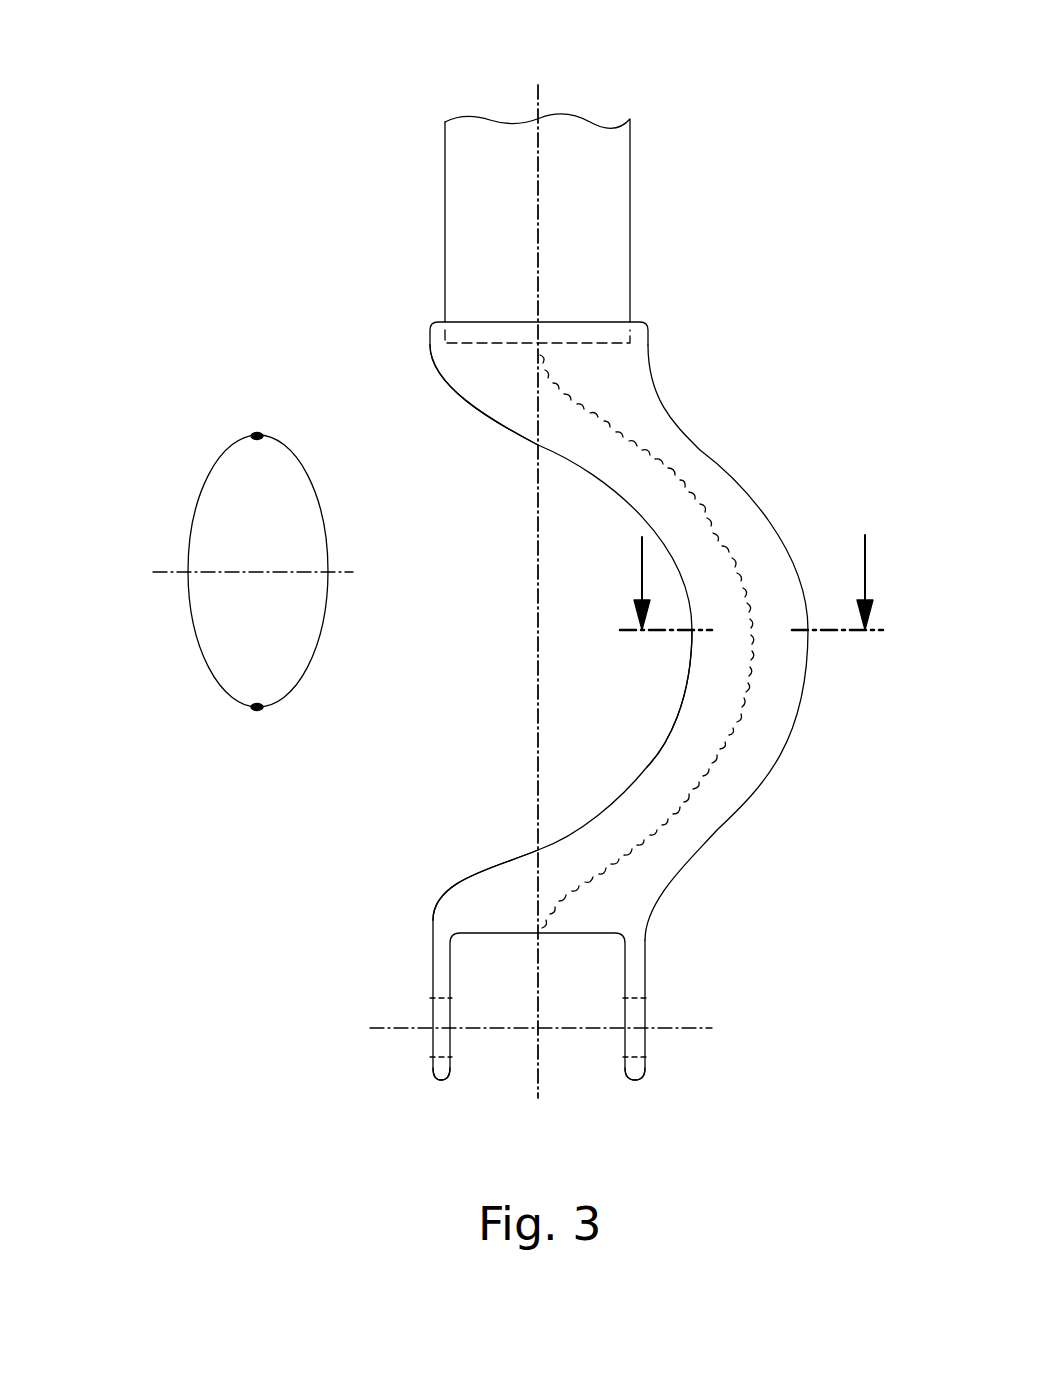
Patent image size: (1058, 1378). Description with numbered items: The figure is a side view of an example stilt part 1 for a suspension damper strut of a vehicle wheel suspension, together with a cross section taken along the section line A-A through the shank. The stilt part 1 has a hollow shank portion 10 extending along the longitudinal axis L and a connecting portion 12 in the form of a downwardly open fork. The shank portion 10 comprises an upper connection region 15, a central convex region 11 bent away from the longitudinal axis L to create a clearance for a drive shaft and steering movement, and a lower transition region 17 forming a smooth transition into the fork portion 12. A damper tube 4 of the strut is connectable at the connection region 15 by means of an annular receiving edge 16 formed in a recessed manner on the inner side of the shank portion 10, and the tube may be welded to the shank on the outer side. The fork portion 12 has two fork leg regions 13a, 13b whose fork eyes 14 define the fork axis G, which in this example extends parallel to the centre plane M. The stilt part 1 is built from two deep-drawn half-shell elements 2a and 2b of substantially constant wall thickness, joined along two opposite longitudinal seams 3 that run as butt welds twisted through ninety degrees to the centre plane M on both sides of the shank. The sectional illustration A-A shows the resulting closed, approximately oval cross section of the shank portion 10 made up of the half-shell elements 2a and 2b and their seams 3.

The stilt part 1 is at (341, 102).
The damper tube 4 is at (605, 200).
The annular receiving edge 16 is at (650, 345).
The upper connection region 15 is at (417, 383).
The shank portion 10 is at (208, 672).
The central convex region 11 is at (675, 673).
The lower transition region 17 is at (422, 908).
The connecting portion 12 is at (410, 975).
The fork leg region 13a is at (440, 1078).
The fork leg region 13b is at (637, 1078).
The fork eye 14 is at (430, 1045).
The half-shell element 2a is at (695, 702).
The half-shell element 2b is at (780, 700).
The longitudinal seam 3 is at (720, 527).
The longitudinal axis L is at (538, 100).
The centre plane M is at (538, 1092).
The fork axis G is at (695, 1030).
The section line A- A is at (746, 582).